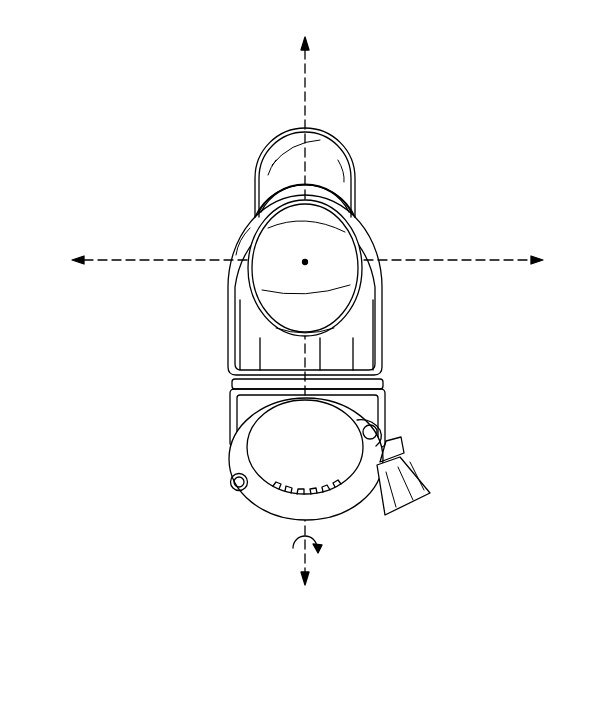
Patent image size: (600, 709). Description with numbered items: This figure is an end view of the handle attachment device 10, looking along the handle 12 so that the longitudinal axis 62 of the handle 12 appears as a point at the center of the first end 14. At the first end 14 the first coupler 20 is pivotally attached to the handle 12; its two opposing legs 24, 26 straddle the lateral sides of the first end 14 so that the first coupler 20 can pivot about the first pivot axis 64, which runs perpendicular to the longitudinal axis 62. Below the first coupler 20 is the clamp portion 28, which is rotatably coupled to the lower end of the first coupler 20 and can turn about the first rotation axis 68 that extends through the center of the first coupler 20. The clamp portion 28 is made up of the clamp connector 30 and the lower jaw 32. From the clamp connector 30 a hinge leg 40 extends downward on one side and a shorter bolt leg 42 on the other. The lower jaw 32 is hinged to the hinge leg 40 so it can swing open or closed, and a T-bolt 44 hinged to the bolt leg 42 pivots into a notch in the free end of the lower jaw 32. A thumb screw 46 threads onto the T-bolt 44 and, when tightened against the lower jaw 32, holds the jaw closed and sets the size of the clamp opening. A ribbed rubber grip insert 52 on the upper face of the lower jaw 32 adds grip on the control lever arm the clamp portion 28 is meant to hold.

The handle attachment device 10 is at (143, 58).
The handle 12 is at (430, 120).
The first end 14 is at (275, 245).
The first coupler 20 is at (185, 334).
The leg 24 is at (372, 240).
The opposing leg 26 is at (240, 265).
The clamp portion 28 is at (185, 400).
The clamp connector 30 is at (305, 395).
The lower jaw 32 is at (272, 503).
The hinge leg 40 is at (240, 462).
The bolt leg 42 is at (373, 402).
The T-bolt 44 is at (402, 438).
The thumb screw 46 is at (405, 490).
The grip insert 52 is at (330, 492).
The longitudinal axis 62 is at (305, 262).
The first pivot axis 64 is at (100, 258).
The first rotation axis 68 is at (305, 68).